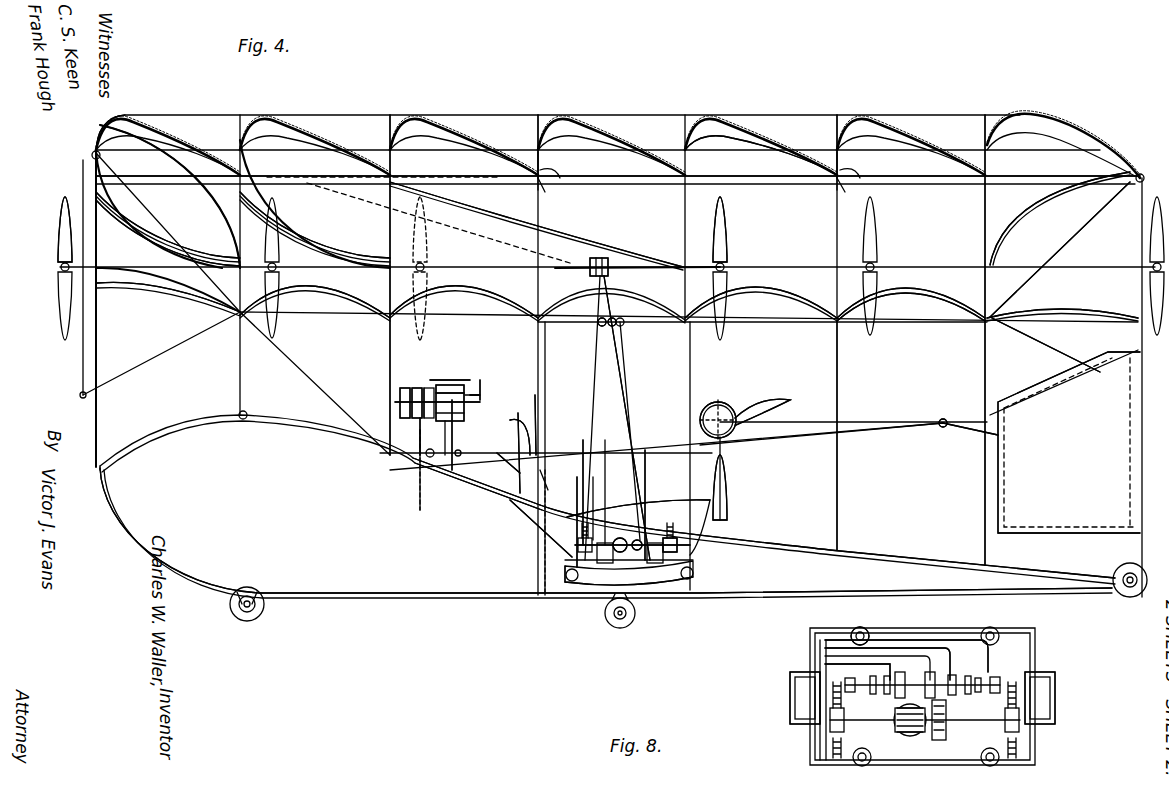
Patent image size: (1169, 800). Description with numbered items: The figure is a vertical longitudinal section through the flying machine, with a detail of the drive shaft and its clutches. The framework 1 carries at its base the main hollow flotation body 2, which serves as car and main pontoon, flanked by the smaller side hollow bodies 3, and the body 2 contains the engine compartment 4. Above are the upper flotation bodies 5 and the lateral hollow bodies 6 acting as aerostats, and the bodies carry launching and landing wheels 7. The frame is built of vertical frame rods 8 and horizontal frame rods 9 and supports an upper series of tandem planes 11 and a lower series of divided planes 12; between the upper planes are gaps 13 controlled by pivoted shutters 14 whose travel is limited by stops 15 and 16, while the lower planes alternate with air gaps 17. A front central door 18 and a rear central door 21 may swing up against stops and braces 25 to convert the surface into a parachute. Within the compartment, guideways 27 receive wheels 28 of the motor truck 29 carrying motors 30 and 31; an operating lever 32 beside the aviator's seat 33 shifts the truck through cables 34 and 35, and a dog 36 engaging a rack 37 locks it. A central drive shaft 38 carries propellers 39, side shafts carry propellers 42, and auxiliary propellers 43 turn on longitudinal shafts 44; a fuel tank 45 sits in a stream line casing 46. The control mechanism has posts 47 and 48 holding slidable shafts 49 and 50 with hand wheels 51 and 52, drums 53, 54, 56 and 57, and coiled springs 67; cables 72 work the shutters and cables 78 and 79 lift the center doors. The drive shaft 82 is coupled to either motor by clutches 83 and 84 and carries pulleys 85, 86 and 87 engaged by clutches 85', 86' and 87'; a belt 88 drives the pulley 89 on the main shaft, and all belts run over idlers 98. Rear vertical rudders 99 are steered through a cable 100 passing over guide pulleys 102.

In FIG. 4, the framework 1 is at (390, 345).
In FIG. 4, the main hollow flotation body 2 is at (478, 600).
In FIG. 4, the side hollow bodies 3 is at (830, 550).
In FIG. 4, the engine compartment 4 is at (722, 568).
In FIG. 4, the upper flotation bodies 5 is at (656, 650).
In FIG. 4, the lateral hollow bodies 6 is at (170, 196).
In FIG. 4, the launching and landing wheels 7 is at (620, 628).
In FIG. 4, the vertical frame rods 8 is at (985, 350).
In FIG. 4, the horizontal frame rods 9 is at (390, 238).
In FIG. 4, the upper tandem planes 11 is at (425, 125).
In FIG. 4, the lower tandem planes 12 is at (510, 300).
In FIG. 4, the gap 13 is at (528, 150).
In FIG. 4, the pivoted shutters 14 is at (707, 166).
In FIG. 4, the stop 15 is at (545, 185).
In FIG. 4, the stop 16 is at (538, 150).
In FIG. 4, the air gaps 17 is at (330, 300).
In FIG. 4, the front central door 18 is at (185, 290).
In FIG. 4, the rear central door 21 is at (1068, 312).
In FIG. 4, the stops and braces 25 is at (94, 165).
In FIG. 4, the guideways 27 is at (562, 585).
In FIG. 4, the wheels or rollers 28 is at (690, 580).
In FIG. 8, the wheels or rollers 28 is at (998, 628).
In FIG. 4, the motor supporting bed or truck 29 is at (590, 585).
In FIG. 8, the motor supporting bed or truck 29 is at (925, 739).
In FIG. 4, the motor 30 is at (575, 530).
In FIG. 8, the motor 30 is at (830, 745).
In FIG. 4, the motor 31 is at (722, 510).
In FIG. 8, the motor 31 is at (1020, 735).
In FIG. 4, the operating lever 32 is at (511, 436).
In FIG. 4, the aviator's seat 33 is at (536, 420).
In FIG. 4, the cable 34 is at (530, 510).
In FIG. 4, the cable 35 is at (740, 500).
In FIG. 4, the dog or locking device 36 is at (520, 430).
In FIG. 4, the rack 37 is at (505, 468).
In FIG. 4, the central longitudinal drive shaft 38 is at (650, 265).
In FIG. 4, the propellers 39 is at (58, 245).
In FIG. 4, the propellers 42 is at (727, 240).
In FIG. 4, the auxiliary propellers 43 is at (718, 400).
In FIG. 4, the longitudinal shafts 44 is at (645, 452).
In FIG. 4, the fuel supply tank 45 is at (730, 405).
In FIG. 4, the stream line casing 46 is at (760, 402).
In FIG. 4, the post 47 is at (400, 450).
In FIG. 4, the post 48 is at (450, 475).
In FIG. 4, the shaft 49 is at (398, 395).
In FIG. 4, the shaft 50 is at (398, 414).
In FIG. 4, the hand wheel 51 is at (472, 392).
In FIG. 4, the hand wheel 52 is at (458, 430).
In FIG. 4, the drum or pulley 53 is at (430, 392).
In FIG. 4, the drum or pulley 54 is at (418, 388).
In FIG. 4, the drum or pulley 56 is at (395, 425).
In FIG. 4, the drum or pulley 57 is at (405, 460).
In FIG. 4, the coiled springs 67 is at (450, 380).
In FIG. 4, the cables 72 is at (945, 182).
In FIG. 4, the cables 78 is at (150, 240).
In FIG. 4, the cables 79 is at (1065, 247).
In FIG. 4, the drive shaft 82 is at (622, 535).
In FIG. 8, the drive shaft 82 is at (992, 678).
In FIG. 8, the clutch device 83 is at (890, 695).
In FIG. 8, the clutch device 84 is at (915, 684).
In FIG. 8, the driving pulley 85 is at (857, 714).
In FIG. 4, the clutch device 85' is at (569, 482).
In FIG. 8, the clutch device 85' is at (857, 639).
In FIG. 8, the driving pulley 86 is at (933, 673).
In FIG. 8, the clutch device 86' is at (888, 640).
In FIG. 4, the driving pulley 87 is at (661, 515).
In FIG. 8, the driving pulley 87 is at (957, 715).
In FIG. 8, the clutch device 87' is at (908, 636).
In FIG. 4, the belt or sprocket chain 88 is at (625, 355).
In FIG. 4, the pulley 89 is at (600, 258).
In FIG. 4, the idlers 98 is at (600, 328).
In FIG. 4, the rear vertical rudders 99 is at (1069, 442).
In FIG. 4, the cable 100 is at (876, 430).
In FIG. 4, the guide pulleys 102 is at (945, 428).